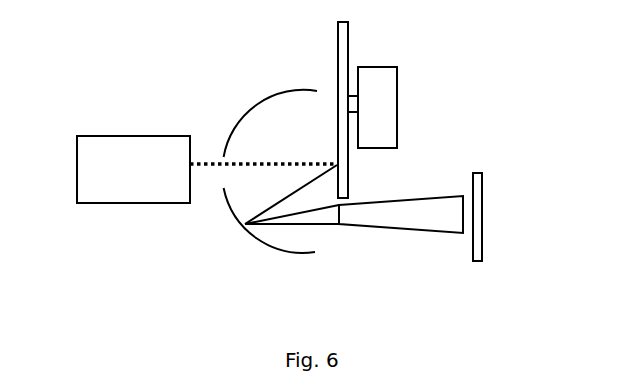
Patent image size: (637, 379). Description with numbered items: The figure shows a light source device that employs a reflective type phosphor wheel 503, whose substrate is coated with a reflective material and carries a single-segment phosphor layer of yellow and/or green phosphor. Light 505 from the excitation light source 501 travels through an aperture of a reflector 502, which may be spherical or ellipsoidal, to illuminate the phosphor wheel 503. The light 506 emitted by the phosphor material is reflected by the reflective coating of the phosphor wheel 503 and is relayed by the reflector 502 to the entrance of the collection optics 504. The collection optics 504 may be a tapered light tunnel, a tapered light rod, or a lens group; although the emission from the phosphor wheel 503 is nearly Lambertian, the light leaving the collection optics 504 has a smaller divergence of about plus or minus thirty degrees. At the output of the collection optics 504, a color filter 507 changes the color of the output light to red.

The excitation light source 501 is at (142, 205).
The reflector 502 is at (252, 243).
The phosphor wheel 503 is at (323, 43).
The collection optics 504 is at (449, 186).
The light 505 is at (203, 152).
The light 506 is at (313, 222).
The color filter 507 is at (492, 250).